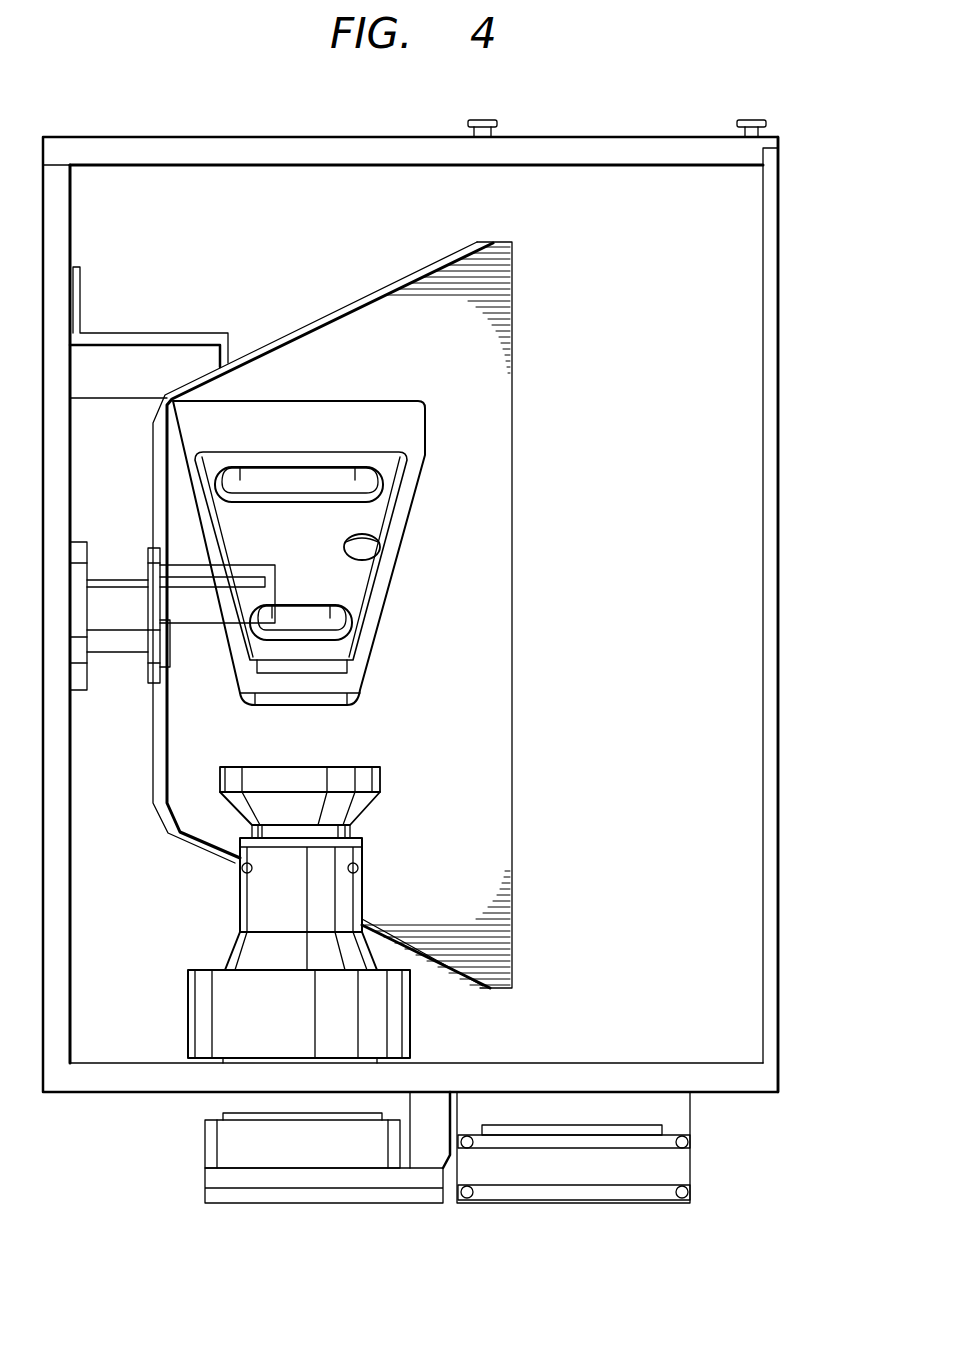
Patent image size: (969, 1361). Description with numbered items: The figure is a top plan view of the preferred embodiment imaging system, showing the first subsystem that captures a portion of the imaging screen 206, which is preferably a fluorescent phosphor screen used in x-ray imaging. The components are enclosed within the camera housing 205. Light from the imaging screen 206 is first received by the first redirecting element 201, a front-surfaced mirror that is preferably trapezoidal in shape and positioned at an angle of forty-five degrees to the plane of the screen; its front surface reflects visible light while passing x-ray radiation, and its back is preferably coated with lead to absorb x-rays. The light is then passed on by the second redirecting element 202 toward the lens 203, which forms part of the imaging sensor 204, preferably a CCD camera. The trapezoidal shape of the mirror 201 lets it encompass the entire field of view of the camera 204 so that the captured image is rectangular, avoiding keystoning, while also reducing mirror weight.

The first redirecting element 201 is at (481, 632).
The second redirecting element 202 is at (357, 398).
The lens 203 is at (363, 888).
The imaging sensor 204 is at (255, 950).
The camera housing 205 is at (163, 137).
The imaging screen 206 is at (780, 613).